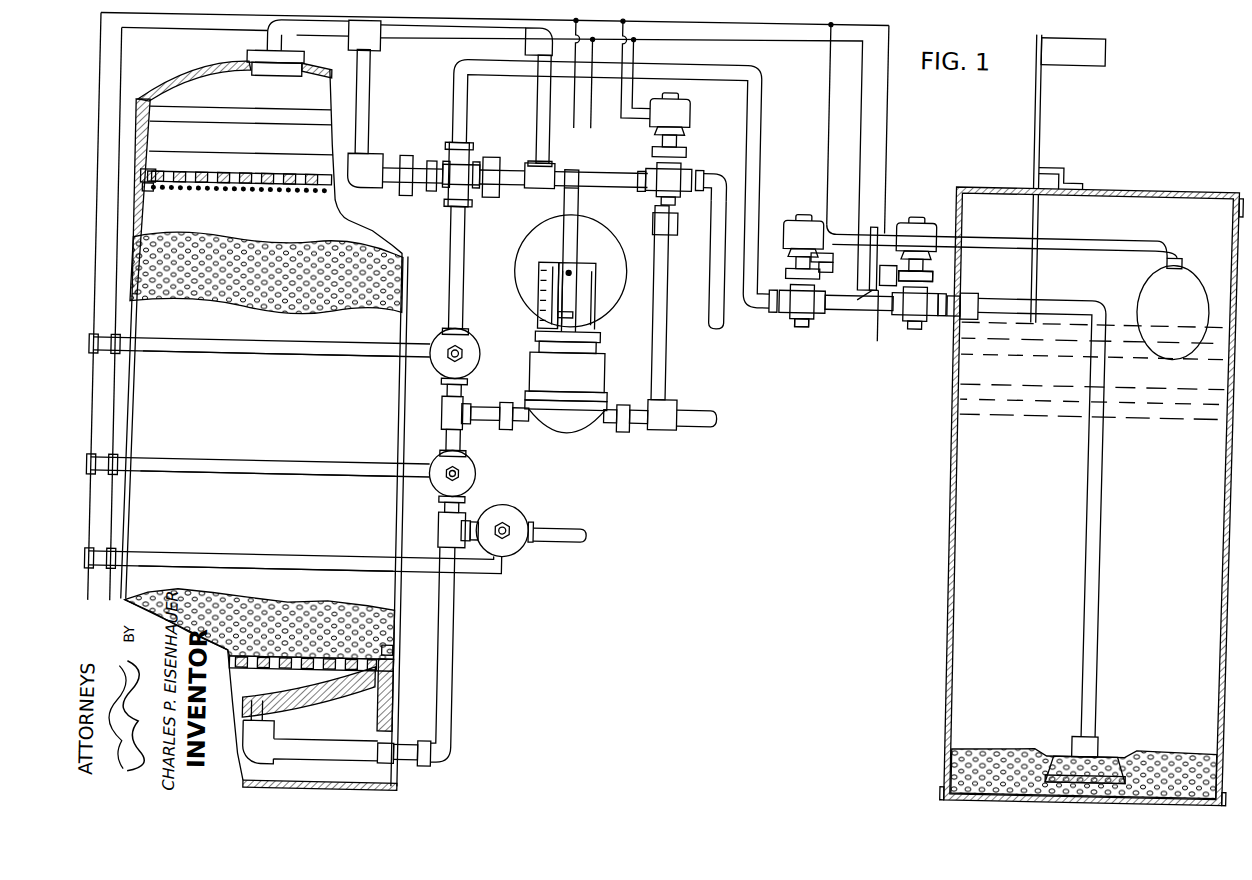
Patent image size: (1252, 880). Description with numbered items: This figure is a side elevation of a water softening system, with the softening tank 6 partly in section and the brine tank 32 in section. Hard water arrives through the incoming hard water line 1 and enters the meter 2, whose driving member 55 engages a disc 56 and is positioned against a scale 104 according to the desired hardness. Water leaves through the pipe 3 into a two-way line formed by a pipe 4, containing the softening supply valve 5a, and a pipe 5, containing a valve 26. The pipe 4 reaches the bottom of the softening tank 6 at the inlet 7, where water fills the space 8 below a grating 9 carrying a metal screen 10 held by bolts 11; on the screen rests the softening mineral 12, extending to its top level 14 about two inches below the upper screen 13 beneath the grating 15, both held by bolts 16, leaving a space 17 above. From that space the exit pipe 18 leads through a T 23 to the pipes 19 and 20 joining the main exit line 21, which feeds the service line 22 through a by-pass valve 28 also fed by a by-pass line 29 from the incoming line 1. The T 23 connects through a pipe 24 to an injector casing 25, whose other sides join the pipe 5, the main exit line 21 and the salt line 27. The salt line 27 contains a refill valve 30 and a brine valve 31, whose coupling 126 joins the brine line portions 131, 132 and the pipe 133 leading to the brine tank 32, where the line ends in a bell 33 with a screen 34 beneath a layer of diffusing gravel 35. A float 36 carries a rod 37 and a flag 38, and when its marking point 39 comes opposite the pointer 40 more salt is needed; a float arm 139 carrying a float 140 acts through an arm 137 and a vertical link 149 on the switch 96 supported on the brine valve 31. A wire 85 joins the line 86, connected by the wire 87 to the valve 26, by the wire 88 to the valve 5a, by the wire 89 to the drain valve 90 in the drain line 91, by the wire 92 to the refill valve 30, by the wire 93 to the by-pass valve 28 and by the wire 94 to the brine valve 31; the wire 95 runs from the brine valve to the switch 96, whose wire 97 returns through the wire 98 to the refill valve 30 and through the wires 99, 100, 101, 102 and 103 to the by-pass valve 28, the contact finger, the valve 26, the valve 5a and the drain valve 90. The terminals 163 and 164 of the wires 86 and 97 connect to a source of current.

The incoming hard water line 1 is at (721, 388).
The meter 2 is at (591, 424).
The pipe 3 is at (494, 399).
The pipe 4 is at (455, 438).
The pipe 5 is at (455, 227).
The softening supply valve 5a is at (486, 463).
The softening tank 6 is at (413, 589).
The bottom inlet of softening tank 7 is at (279, 723).
The space 8 is at (345, 681).
The grating 9 is at (272, 665).
The metal screen 10 is at (304, 665).
The bolts 11 is at (406, 645).
The softening mineral 12 is at (283, 600).
The upper screen 13 is at (270, 189).
The top level of mineral 14 is at (300, 232).
The grating 15 is at (268, 171).
The bolts 16 is at (155, 190).
The space 17 is at (205, 139).
The exit pipe 18 is at (329, 32).
The pipe 19 is at (440, 33).
The pipe 20 is at (539, 85).
The main exit line 21 is at (611, 163).
The service line 22 is at (715, 264).
The T 23 is at (373, 44).
The pipe 24 is at (372, 90).
The injector casing 25 is at (479, 153).
The valve 26 is at (477, 345).
The salt line 27 is at (470, 101).
The by-pass valve 28 is at (681, 175).
The by-pass line 29 is at (673, 309).
The refill valve 30 is at (795, 206).
The brine valve 31 is at (930, 209).
The brine tank 32 is at (960, 474).
The bell 33 is at (1115, 731).
The screen 34 is at (1125, 757).
The diffusing gravel 35 is at (988, 741).
The float 36 is at (1046, 297).
The rod 37 is at (1042, 201).
The flag 38 is at (1106, 41).
The marking point 39 is at (1042, 64).
The pointer 40 is at (1045, 148).
The driving member 55 is at (588, 305).
The disc 56 is at (605, 222).
The wire 85 is at (576, 104).
The line 86 is at (212, 12).
The wire 87 is at (200, 351).
The wire 88 is at (191, 471).
The wire 89 is at (201, 565).
The drain valve 90 is at (521, 550).
The drain line 91 is at (582, 533).
The wire 92 is at (831, 155).
The wire 93 is at (629, 85).
The wire 94 is at (889, 126).
The wire 95 is at (938, 257).
The switch 96 is at (884, 329).
The wire 97 is at (147, 28).
The wire 98 is at (837, 258).
The wire 99 is at (636, 46).
The wire 100 is at (593, 107).
The wire 101 is at (172, 337).
The wire 102 is at (176, 457).
The wire 103 is at (182, 551).
The scale 104 is at (543, 285).
The coupling 126 is at (795, 312).
The brine line portion 131 is at (775, 300).
The brine line portion 132 is at (857, 294).
The pipe 133 is at (946, 298).
The bell crank arm 137 is at (843, 219).
The float arm 139 is at (1067, 239).
The float 140 is at (1153, 256).
The vertical link 149 is at (878, 211).
The terminal 163 is at (96, 318).
The terminal 164 is at (132, 326).